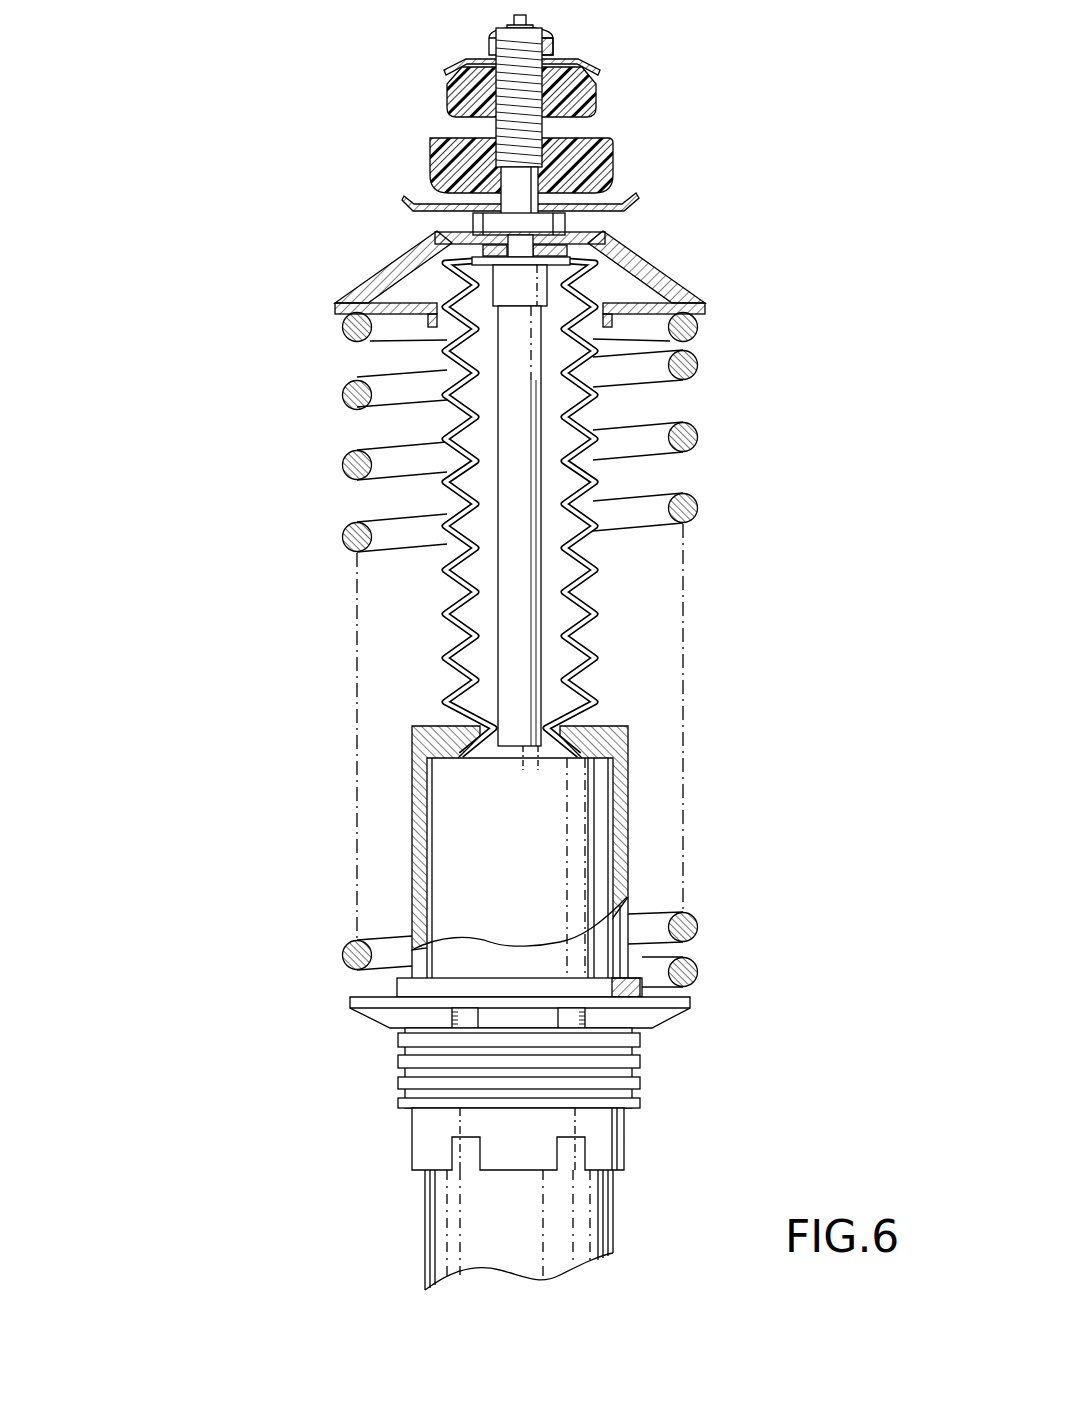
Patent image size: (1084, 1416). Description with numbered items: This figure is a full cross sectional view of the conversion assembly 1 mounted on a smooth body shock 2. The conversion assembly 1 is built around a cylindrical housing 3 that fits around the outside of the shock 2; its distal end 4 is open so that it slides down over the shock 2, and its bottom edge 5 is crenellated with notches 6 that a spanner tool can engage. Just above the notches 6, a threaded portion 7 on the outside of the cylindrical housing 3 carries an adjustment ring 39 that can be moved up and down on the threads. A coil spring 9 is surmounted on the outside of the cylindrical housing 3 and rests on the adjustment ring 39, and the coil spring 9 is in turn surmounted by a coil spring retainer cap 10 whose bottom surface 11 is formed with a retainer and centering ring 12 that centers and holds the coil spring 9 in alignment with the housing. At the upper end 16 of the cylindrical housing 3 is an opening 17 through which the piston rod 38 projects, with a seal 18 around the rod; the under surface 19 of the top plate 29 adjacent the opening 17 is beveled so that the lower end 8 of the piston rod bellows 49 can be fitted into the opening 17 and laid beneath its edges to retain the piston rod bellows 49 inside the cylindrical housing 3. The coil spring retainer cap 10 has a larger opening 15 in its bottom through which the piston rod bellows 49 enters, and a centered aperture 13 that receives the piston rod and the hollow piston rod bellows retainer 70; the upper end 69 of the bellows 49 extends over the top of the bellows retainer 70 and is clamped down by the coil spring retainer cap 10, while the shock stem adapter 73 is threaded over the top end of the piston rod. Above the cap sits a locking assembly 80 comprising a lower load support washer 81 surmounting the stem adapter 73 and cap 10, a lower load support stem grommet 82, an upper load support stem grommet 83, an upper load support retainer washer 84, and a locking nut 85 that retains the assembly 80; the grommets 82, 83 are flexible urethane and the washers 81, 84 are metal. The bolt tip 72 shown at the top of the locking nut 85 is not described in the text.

The conversion assembly 1 is at (197, 232).
The smooth body shock 2 is at (595, 838).
The cylindrical housing 3 is at (624, 870).
The distal end 4 is at (523, 1180).
The bottom edge 5 is at (418, 1170).
The notches 6 is at (468, 1160).
The threaded portion 7 is at (640, 1103).
The lower end of the piston rod bellows 8 is at (533, 819).
The coil spring 9 is at (494, 650).
The coil spring retainer cap 10 is at (541, 275).
The bottom surface 11 is at (700, 333).
The retainer and centering ring 12 is at (346, 343).
The centered aperture 13 is at (585, 236).
The larger opening 15 is at (580, 290).
The upper end 16 is at (438, 726).
The opening 17 is at (412, 748).
The seal 18 is at (535, 757).
The under surface 19 is at (608, 768).
The top plate 29 is at (650, 737).
The piston rod 38 is at (519, 546).
The adjustment ring 39 is at (692, 1000).
The piston rod bellows 49 is at (594, 632).
The upper end of the bellows 69 is at (452, 241).
The hollow piston rod bellows retainer 70 is at (517, 290).
The bolt tip 72 is at (530, 18).
The shock stem adapter 73 is at (457, 98).
The locking assembly 80 is at (300, 8).
The lower load support washer 81 is at (638, 197).
The lower load support stem grommet 82 is at (609, 157).
The upper load support stem grommet 83 is at (595, 102).
The upper load support retainer washer 84 is at (452, 66).
The locking nut 85 is at (556, 50).